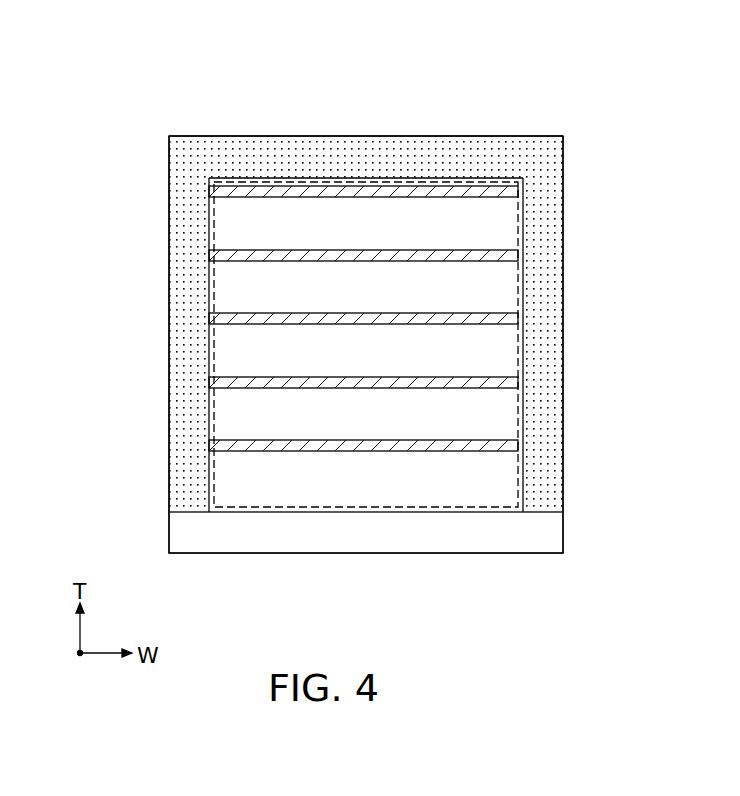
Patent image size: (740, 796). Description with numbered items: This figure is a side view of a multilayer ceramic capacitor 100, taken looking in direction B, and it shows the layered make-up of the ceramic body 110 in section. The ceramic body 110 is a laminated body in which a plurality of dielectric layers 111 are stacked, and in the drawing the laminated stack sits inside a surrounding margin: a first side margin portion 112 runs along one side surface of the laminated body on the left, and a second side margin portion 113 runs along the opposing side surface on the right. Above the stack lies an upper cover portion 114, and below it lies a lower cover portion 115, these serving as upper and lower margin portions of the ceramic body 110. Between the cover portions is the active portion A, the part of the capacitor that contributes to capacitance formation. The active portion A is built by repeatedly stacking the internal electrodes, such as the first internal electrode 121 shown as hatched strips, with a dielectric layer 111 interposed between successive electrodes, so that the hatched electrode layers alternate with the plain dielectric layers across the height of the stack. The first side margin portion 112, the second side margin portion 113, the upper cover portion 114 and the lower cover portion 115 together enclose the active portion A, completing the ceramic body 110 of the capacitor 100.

The multilayer ceramic capacitor 100 is at (290, 28).
The ceramic body 110 is at (435, 137).
The dielectric layer 111 is at (428, 262).
The first side margin portion 112 is at (183, 283).
The second side margin portion 113 is at (553, 347).
The upper cover portion 114 is at (301, 141).
The lower cover portion 115 is at (442, 540).
The first internal electrode 121 is at (523, 190).
The active portion A is at (368, 182).
The direction B is at (382, 651).